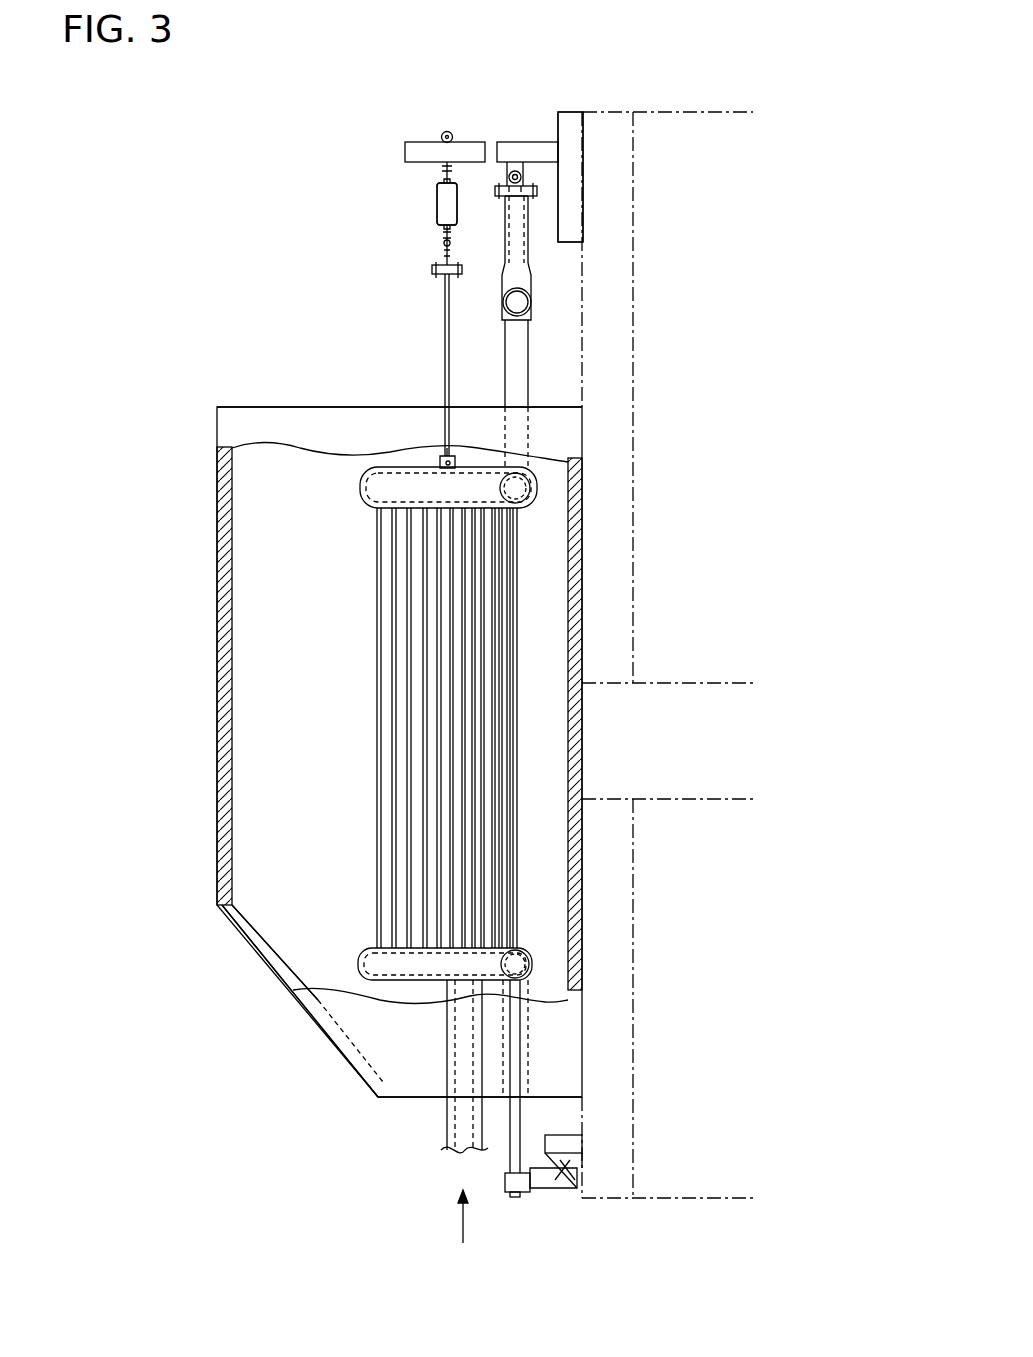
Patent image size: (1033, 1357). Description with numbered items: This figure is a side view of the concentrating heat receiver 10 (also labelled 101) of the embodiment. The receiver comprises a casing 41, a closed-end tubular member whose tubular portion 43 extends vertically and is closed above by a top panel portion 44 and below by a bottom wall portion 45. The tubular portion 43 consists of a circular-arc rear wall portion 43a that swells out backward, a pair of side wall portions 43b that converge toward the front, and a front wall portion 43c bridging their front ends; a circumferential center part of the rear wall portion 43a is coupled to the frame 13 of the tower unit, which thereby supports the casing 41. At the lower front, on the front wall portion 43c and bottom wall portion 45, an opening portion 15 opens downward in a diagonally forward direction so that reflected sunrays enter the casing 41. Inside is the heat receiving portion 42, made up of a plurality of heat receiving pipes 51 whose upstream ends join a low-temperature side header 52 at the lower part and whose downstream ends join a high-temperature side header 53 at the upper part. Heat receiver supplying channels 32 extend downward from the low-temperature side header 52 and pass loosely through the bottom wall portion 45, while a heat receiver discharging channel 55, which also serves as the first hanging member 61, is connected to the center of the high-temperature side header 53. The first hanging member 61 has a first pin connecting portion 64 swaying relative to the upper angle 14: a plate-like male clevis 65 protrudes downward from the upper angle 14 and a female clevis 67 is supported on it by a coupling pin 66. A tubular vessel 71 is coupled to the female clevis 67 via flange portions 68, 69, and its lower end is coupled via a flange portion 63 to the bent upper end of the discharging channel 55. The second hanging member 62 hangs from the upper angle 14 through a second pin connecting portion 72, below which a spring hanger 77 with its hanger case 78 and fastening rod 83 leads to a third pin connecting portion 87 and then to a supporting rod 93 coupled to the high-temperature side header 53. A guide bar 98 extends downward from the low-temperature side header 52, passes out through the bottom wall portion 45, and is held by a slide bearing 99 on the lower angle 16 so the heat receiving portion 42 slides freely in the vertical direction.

The concentrating heat receiver 10 is at (788, 140).
The cooling device variant 101 is at (570, 177).
The frame 13 is at (636, 598).
The upper angle 14 is at (412, 142).
The opening portion 15 is at (222, 910).
The lower angle 16 is at (578, 1176).
The heat receiver supplying channel 32 is at (447, 1122).
The casing 41 is at (217, 404).
The heat receiving portion 42 is at (366, 764).
The tubular portion 43 is at (423, 772).
The rear wall portion 43a is at (576, 527).
The side wall portion 43b is at (262, 655).
The front wall portion 43c is at (226, 727).
The top panel portion 44 is at (323, 407).
The bottom wall portion 45 is at (400, 1098).
The heat receiving pipes 51 is at (425, 652).
The low-temperature side header 52 is at (386, 980).
The high-temperature side header 53 is at (360, 492).
The heat receiver discharging channel 55 is at (532, 355).
The first hanging member 61 is at (568, 200).
The second hanging member 62 is at (420, 268).
The flange portion 63 is at (532, 290).
The first pin connecting portion 64 is at (498, 172).
The male clevis 65 is at (516, 171).
The coupling pin 66 is at (522, 178).
The female clevis 67 is at (521, 177).
The flange portion 68 is at (538, 190).
The flange portion 69 is at (538, 196).
The tubular vessel 71 is at (540, 218).
The second pin connecting portion 72 is at (426, 175).
The spring hanger 77 is at (428, 207).
The hanger case 78 is at (447, 204).
The fastening rod 83 is at (442, 241).
The third pin connecting portion 87 is at (456, 163).
The supporting rod 93 is at (444, 298).
The guide bar 98 is at (520, 1122).
The slide bearing 99 is at (526, 1191).